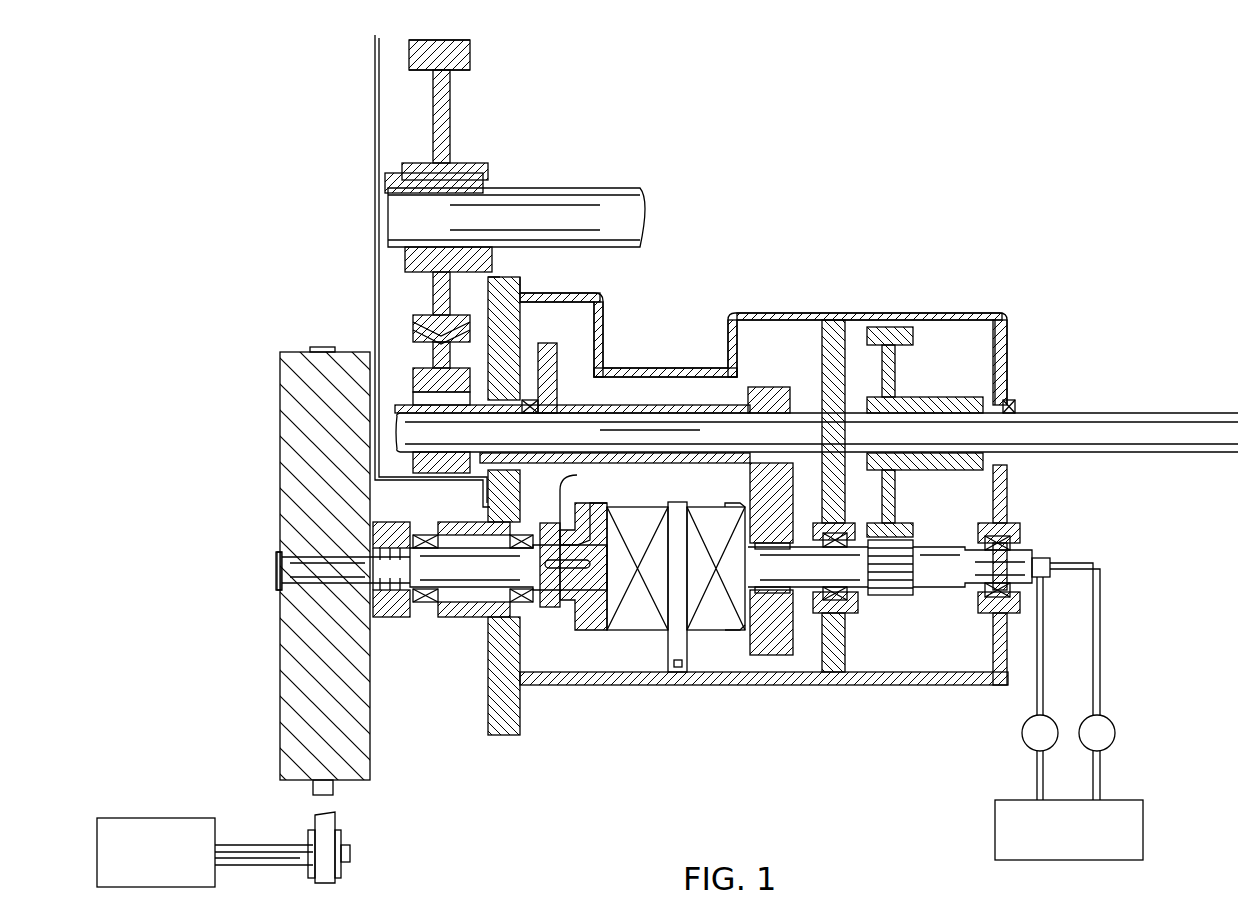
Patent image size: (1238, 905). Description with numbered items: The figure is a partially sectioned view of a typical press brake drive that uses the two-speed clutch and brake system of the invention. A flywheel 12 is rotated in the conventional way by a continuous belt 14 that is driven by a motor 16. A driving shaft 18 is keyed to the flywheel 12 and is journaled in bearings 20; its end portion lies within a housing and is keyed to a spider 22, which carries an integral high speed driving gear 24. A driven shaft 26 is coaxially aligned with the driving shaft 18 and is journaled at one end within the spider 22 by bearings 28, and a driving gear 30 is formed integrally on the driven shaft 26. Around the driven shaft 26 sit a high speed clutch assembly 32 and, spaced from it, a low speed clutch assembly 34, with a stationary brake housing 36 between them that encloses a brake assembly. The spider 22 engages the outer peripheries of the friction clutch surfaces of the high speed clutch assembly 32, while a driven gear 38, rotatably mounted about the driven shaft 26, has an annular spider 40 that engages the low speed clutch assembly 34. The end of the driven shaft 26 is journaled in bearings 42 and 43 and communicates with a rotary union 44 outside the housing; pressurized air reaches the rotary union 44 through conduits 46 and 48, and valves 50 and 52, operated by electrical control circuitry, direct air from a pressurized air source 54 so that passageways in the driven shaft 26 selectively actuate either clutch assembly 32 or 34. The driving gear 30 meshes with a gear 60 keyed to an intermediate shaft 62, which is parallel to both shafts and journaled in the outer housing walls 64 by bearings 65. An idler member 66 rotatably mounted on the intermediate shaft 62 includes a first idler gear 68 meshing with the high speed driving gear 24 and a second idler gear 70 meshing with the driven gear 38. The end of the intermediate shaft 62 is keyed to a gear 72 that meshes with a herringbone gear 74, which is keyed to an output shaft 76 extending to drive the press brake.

The flywheel 12 is at (280, 421).
The continuous belt 14 is at (337, 822).
The motor 16 is at (150, 818).
The driving shaft 18 is at (458, 555).
The bearings 20 is at (430, 602).
The spider 22 is at (597, 518).
The high speed driving gear 24 is at (555, 610).
The driven shaft 26 is at (834, 574).
The bearings 28 is at (595, 602).
The driving gear 30 is at (890, 597).
The high speed clutch assembly 32 is at (645, 518).
The low speed clutch assembly 34 is at (707, 518).
The stationary brake housing 36 is at (668, 655).
The driven gear 38 is at (775, 660).
The annular spider 40 is at (740, 635).
The bearing 42 is at (982, 610).
The bearing 43 is at (845, 612).
The rotary union 44 is at (1040, 557).
The conduit 46 is at (1036, 701).
The conduit 48 is at (1102, 701).
The valve 50 is at (1021, 739).
The valve 52 is at (1116, 739).
The pressurized air source 54 is at (1145, 822).
The gear 60 is at (882, 327).
The intermediate shaft 62 is at (1108, 412).
The outer housing walls 64 is at (505, 707).
The bearings 65 is at (540, 408).
The idler member 66 is at (662, 405).
The first idler gear 68 is at (560, 362).
The second idler gear 70 is at (765, 386).
The gear 72 is at (428, 488).
The herringbone gear 74 is at (470, 62).
The output shaft 76 is at (568, 188).